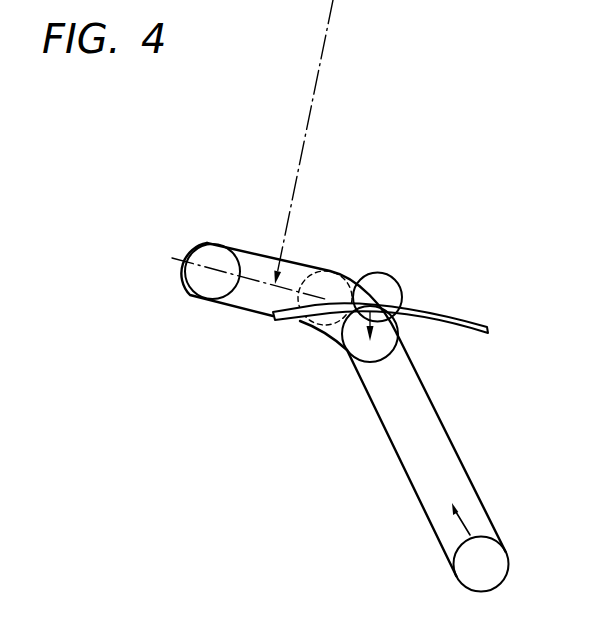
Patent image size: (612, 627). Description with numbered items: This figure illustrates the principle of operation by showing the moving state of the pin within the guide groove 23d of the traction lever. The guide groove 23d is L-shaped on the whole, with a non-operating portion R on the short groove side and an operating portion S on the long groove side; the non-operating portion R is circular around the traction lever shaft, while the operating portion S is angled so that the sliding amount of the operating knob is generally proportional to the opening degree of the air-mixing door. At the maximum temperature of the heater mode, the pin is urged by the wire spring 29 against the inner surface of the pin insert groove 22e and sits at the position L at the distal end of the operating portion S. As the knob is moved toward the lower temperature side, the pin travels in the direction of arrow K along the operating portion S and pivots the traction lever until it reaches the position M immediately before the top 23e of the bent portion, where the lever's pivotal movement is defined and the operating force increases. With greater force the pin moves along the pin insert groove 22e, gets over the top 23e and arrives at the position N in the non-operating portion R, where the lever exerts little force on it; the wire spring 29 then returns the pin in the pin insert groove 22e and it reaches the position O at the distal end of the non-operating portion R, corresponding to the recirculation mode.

The pin insert groove 22e is at (383, 274).
The guide groove 23d is at (392, 448).
The top 23e is at (320, 330).
The wire spring 29 is at (401, 323).
The position N is at (337, 273).
The position M is at (358, 354).
The position O is at (186, 300).
The position L is at (453, 573).
The non-operating portion R is at (242, 300).
The operating portion S is at (449, 442).
The arrow K is at (460, 525).